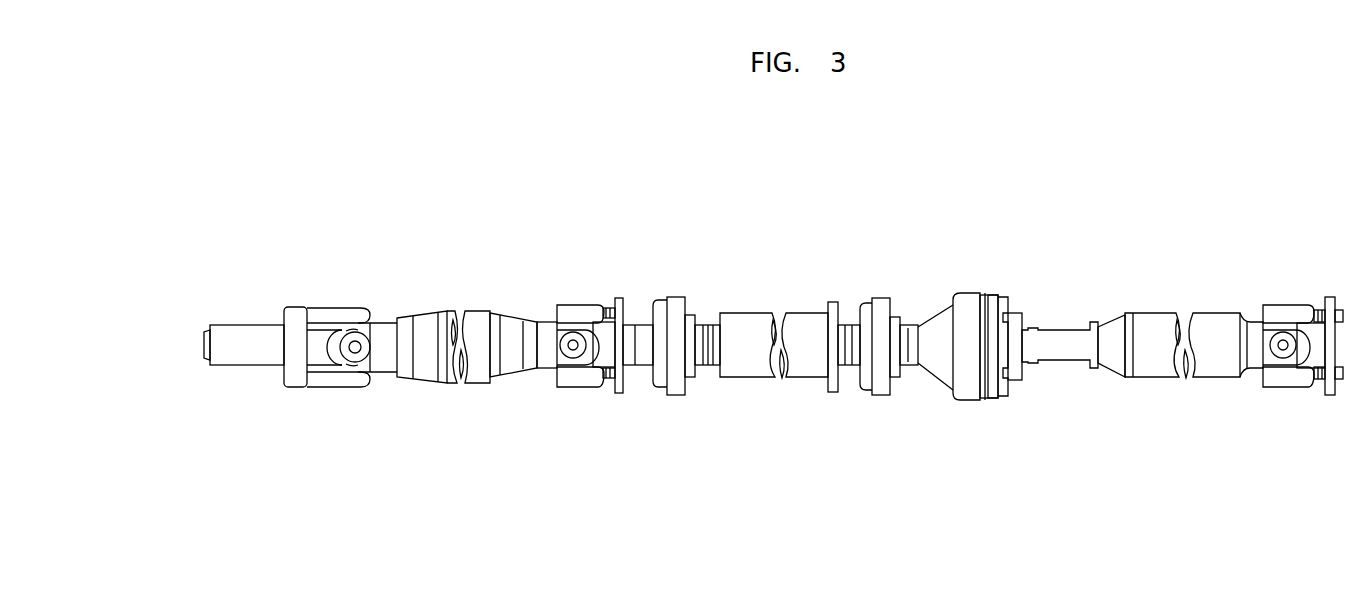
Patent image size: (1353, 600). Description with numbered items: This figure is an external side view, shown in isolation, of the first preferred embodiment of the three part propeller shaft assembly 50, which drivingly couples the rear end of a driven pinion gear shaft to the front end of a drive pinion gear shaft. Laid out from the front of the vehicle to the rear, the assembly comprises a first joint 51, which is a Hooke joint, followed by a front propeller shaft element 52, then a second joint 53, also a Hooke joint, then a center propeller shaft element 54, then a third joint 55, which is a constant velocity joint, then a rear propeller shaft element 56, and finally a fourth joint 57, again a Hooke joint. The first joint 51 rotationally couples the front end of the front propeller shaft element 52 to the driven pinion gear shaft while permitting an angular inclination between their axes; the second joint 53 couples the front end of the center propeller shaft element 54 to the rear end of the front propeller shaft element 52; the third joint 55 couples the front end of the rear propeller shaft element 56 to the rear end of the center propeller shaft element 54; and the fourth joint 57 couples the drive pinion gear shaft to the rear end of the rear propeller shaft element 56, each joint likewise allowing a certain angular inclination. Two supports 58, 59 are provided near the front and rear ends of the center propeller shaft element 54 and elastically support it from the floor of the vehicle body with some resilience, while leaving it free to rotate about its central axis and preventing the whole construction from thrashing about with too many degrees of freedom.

The three part propeller shaft assembly 50 is at (808, 205).
The first joint 51 is at (330, 396).
The front propeller shaft element 52 is at (447, 309).
The second joint 53 is at (579, 393).
The center propeller shaft element 54 is at (755, 310).
The third joint 55 is at (963, 413).
The rear propeller shaft element 56 is at (1150, 312).
The fourth joint 57 is at (1284, 394).
The support 58 is at (677, 298).
The support 59 is at (873, 306).